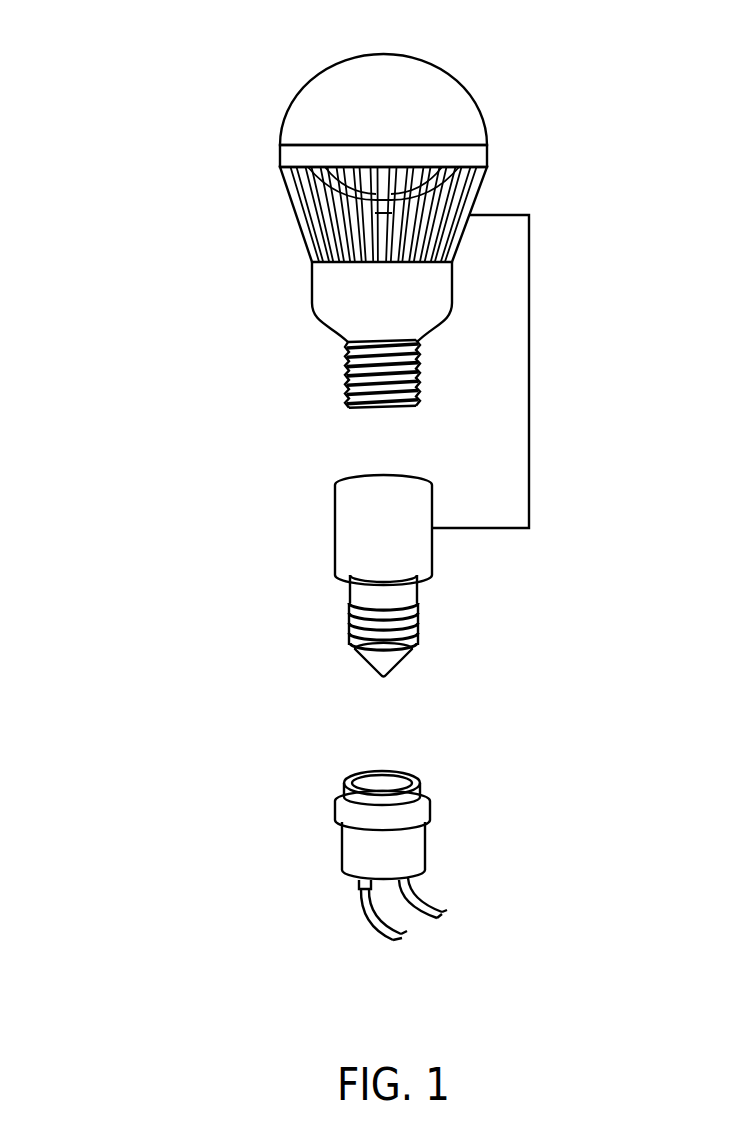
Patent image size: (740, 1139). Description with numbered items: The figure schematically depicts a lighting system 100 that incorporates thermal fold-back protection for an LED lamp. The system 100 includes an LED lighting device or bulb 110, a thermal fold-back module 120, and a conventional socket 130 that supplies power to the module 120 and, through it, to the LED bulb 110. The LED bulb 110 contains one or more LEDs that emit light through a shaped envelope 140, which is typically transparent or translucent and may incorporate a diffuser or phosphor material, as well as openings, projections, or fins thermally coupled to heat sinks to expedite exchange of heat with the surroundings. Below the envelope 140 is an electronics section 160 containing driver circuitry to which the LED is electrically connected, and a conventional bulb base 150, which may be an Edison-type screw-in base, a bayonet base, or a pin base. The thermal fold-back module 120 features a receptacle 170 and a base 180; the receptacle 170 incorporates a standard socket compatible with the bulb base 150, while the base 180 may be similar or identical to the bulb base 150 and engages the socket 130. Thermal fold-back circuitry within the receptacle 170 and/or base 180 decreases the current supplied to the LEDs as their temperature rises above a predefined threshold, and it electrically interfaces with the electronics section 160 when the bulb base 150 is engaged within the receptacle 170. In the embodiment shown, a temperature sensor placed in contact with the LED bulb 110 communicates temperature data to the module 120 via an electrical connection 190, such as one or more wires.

The lighting system 100 is at (132, 153).
The LED lighting device 110 is at (298, 54).
The thermal fold-back module 120 is at (323, 504).
The socket 130 is at (420, 780).
The envelope 140 is at (443, 92).
The bulb base 150 is at (347, 364).
The electronics section 160 is at (330, 284).
The receptacle 170 is at (343, 546).
The base 180 is at (415, 615).
The electrical connection 190 is at (529, 383).